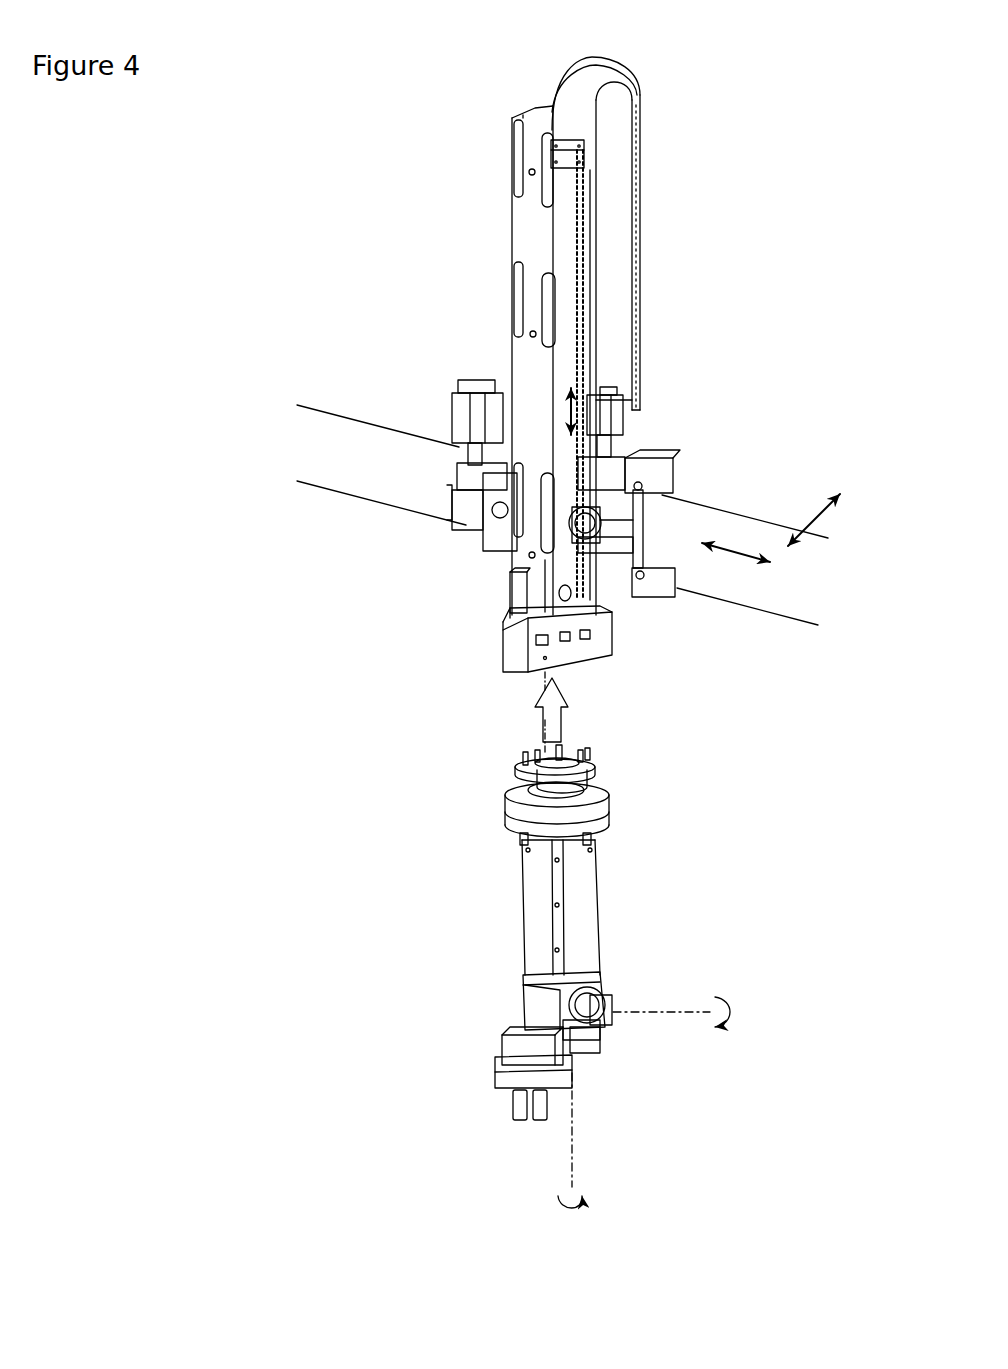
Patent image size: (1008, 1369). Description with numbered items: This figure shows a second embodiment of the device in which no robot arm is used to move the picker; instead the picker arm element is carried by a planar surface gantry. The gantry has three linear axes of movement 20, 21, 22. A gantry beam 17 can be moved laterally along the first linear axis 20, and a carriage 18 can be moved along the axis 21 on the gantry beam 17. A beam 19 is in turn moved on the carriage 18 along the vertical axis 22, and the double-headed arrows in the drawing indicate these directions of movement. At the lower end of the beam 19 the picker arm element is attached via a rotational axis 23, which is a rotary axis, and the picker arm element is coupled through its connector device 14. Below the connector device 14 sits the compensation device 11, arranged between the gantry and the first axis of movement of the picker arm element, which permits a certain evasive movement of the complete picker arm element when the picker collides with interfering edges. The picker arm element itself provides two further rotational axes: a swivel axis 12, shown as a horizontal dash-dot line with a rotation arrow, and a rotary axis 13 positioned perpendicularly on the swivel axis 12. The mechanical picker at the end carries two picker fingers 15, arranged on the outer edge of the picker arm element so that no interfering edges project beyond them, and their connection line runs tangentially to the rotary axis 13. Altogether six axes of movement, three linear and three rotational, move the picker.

The compensation device 11 is at (613, 807).
The swivel axis 12 is at (643, 1005).
The rotary axis 13 is at (577, 1135).
The connector device 14 is at (590, 750).
The picker fingers 15 is at (540, 1127).
The gantry beam 17 is at (718, 494).
The carriage 18 is at (651, 451).
The beam 19 is at (537, 302).
The linear axis of movement 20 is at (815, 519).
The linear axis of movement 21 is at (739, 553).
The vertical axis 22 is at (567, 411).
The rotational axis 23 is at (548, 630).